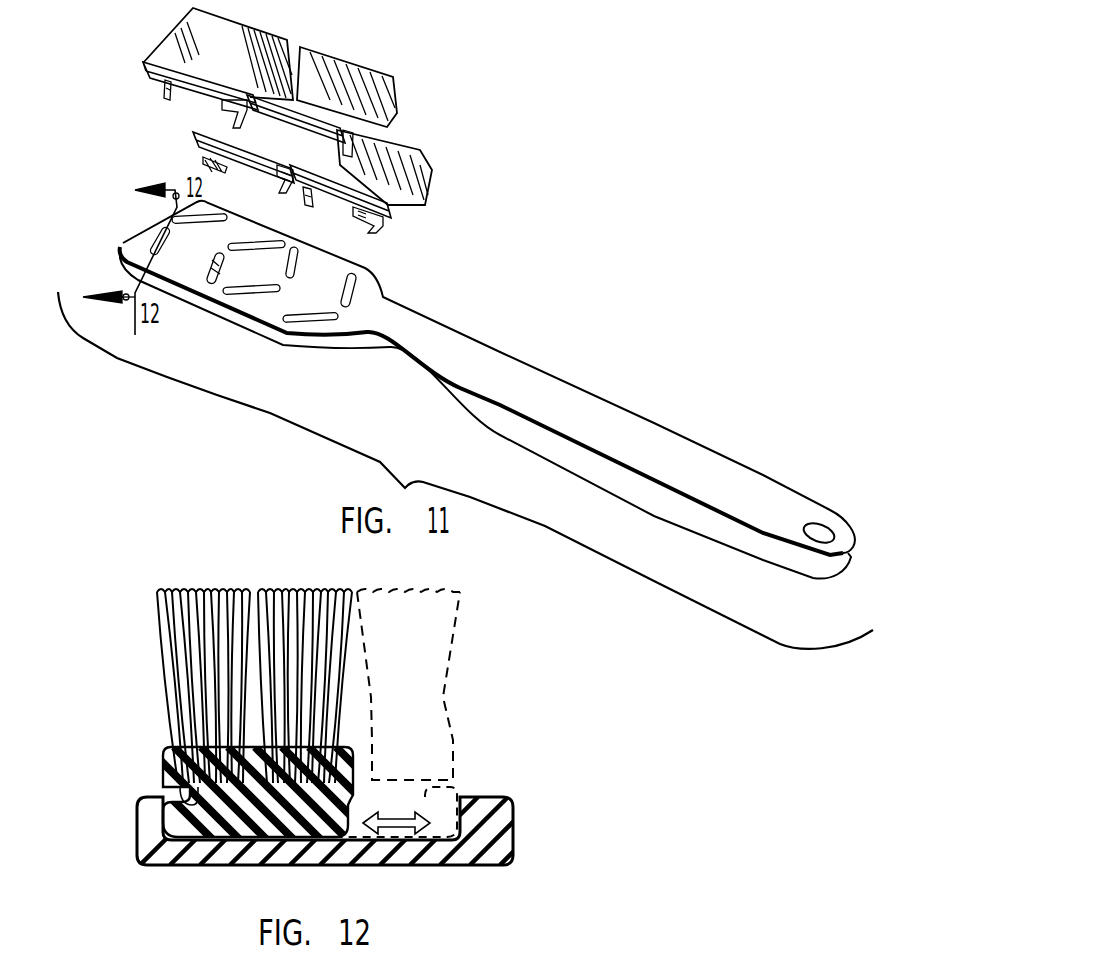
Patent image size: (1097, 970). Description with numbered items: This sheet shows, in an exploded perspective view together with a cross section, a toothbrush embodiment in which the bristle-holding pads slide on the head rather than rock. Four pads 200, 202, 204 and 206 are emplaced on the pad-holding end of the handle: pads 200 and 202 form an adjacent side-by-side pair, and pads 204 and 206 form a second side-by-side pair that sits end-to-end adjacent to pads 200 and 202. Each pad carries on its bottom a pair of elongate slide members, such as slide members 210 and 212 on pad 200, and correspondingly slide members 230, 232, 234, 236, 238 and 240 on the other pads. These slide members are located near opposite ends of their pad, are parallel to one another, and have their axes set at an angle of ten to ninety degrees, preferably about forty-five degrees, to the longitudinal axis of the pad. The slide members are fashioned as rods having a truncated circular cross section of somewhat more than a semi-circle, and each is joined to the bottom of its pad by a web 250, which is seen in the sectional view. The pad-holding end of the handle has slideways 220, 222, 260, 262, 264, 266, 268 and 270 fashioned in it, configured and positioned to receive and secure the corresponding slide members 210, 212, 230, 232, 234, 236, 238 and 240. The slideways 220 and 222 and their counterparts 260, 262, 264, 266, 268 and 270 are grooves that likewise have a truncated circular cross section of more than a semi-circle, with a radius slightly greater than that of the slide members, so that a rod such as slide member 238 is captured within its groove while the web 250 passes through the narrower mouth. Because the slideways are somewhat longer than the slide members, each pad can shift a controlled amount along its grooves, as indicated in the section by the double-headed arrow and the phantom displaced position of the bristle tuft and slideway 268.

In FIG. 11, the pad 200 is at (337, 62).
In FIG. 11, the pad 202 is at (385, 213).
In FIG. 11, the pad 204 is at (193, 137).
In FIG. 11, the pad 206 is at (150, 66).
In FIG. 11, the slide member 210 is at (393, 127).
In FIG. 11, the slide member 212 is at (307, 47).
In FIG. 11, the slideway 220 is at (325, 321).
In FIG. 11, the slideway 222 is at (260, 294).
In FIG. 11, the slide member 230 is at (365, 228).
In FIG. 11, the slide member 232 is at (300, 192).
In FIG. 11, the slide member 234 is at (260, 185).
In FIG. 11, the slide member 236 is at (203, 164).
In FIG. 11, the slide member 238 is at (165, 90).
In FIG. 12, the slide member 238 is at (180, 822).
In FIG. 11, the slide member 240 is at (220, 110).
In FIG. 12, the web 250 is at (186, 793).
In FIG. 11, the slideway 260 is at (357, 292).
In FIG. 11, the slideway 262 is at (311, 269).
In FIG. 11, the slideway 264 is at (271, 251).
In FIG. 11, the slideway 266 is at (170, 216).
In FIG. 11, the slideway 268 is at (147, 230).
In FIG. 12, the slideway 268 is at (442, 805).
In FIG. 11, the slideway 270 is at (217, 285).